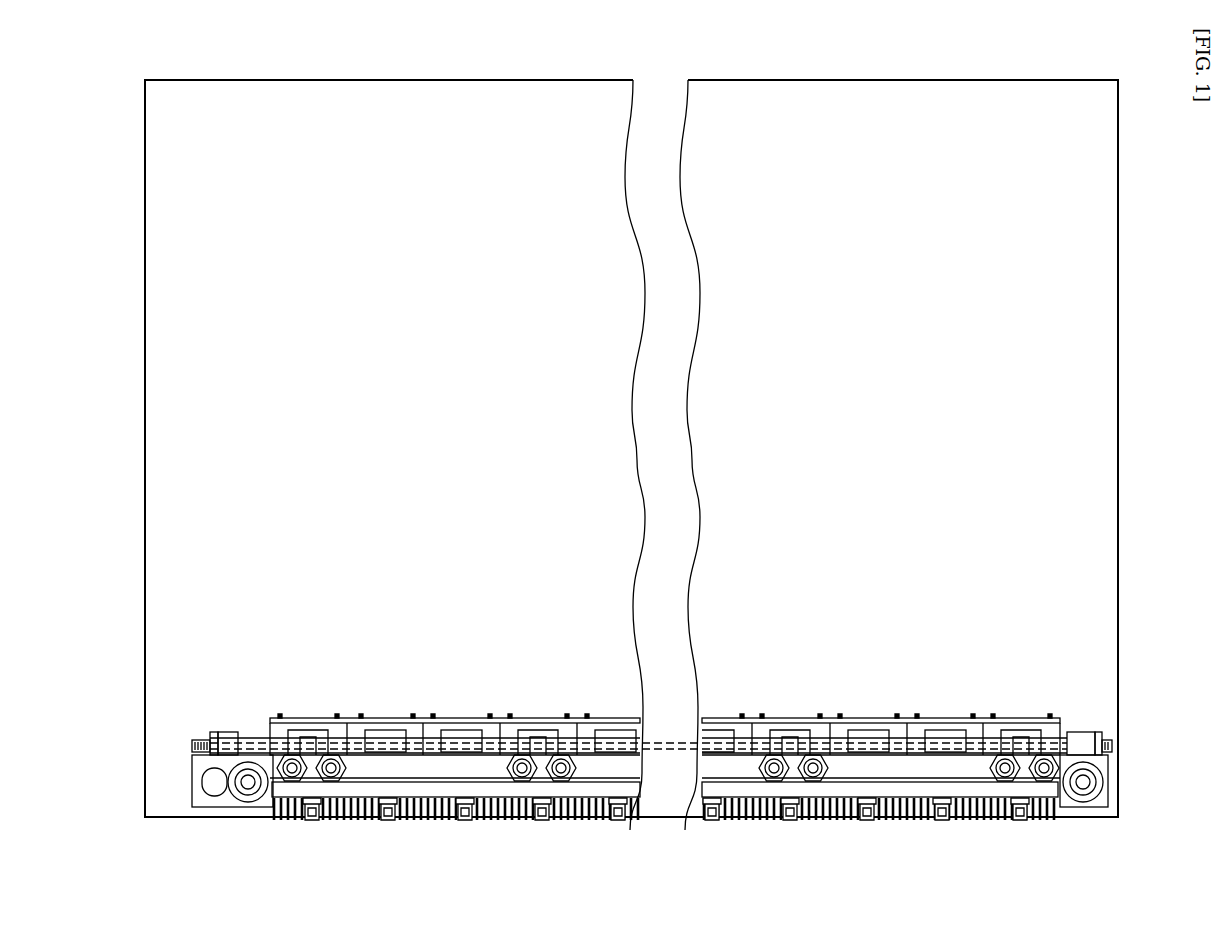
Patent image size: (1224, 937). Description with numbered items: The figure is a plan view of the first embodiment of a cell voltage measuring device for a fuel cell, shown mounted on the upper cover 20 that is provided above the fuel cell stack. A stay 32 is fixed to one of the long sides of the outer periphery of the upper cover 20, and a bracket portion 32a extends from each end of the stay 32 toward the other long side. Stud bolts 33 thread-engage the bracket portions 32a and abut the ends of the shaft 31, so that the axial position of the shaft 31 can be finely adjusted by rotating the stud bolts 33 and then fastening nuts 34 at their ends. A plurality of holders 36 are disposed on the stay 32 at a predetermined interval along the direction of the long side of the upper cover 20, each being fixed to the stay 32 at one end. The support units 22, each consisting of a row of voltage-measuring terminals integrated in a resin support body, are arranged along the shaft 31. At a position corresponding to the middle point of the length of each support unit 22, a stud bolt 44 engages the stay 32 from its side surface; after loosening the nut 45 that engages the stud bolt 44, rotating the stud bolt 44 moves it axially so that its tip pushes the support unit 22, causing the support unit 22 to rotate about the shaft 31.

The upper cover 20 is at (141, 295).
The support unit 22 is at (308, 728).
The shaft 31 is at (388, 742).
The stay 32 is at (422, 768).
The bracket portion 32a is at (228, 732).
The stud bolt 33 is at (192, 747).
The nut 34 is at (214, 732).
The holder 36 is at (543, 779).
The stud bolt 44 is at (668, 835).
The nut 45 is at (616, 828).